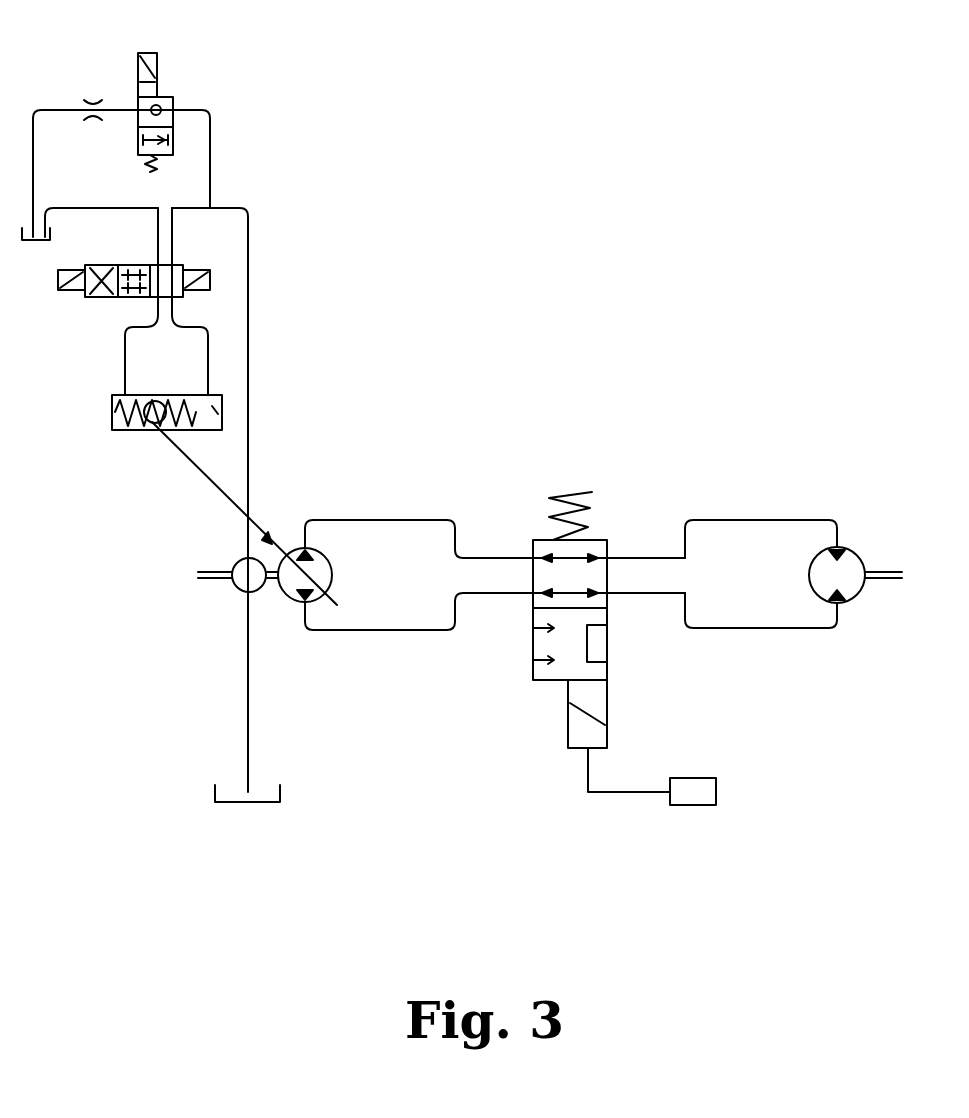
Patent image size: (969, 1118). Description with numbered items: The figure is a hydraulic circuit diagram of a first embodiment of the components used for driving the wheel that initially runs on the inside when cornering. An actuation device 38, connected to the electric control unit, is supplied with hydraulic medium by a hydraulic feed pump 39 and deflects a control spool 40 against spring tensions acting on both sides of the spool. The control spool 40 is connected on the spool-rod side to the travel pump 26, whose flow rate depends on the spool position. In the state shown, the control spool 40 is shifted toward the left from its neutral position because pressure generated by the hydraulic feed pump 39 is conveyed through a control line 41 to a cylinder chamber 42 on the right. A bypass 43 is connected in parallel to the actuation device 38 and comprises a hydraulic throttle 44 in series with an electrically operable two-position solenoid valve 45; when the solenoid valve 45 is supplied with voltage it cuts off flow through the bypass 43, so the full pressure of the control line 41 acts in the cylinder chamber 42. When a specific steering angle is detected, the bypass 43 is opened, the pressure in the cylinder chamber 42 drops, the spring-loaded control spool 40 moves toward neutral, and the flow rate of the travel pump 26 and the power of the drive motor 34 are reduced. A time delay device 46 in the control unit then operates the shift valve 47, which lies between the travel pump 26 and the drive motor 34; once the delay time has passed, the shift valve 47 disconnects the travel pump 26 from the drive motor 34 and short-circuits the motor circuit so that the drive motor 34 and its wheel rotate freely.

The travel pump 26 is at (322, 572).
The drive motor 34 is at (812, 570).
The actuation device 38 is at (93, 306).
The hydraulic feed pump 39 is at (245, 580).
The control spool 40 is at (157, 395).
The control line 41 is at (250, 445).
The cylinder chamber 42 is at (214, 400).
The bypass 43 is at (212, 135).
The hydraulic throttle 44 is at (93, 104).
The 2/2 solenoid valve 45 is at (176, 86).
The time delay device 46 is at (693, 796).
The shift valve 47 is at (610, 524).